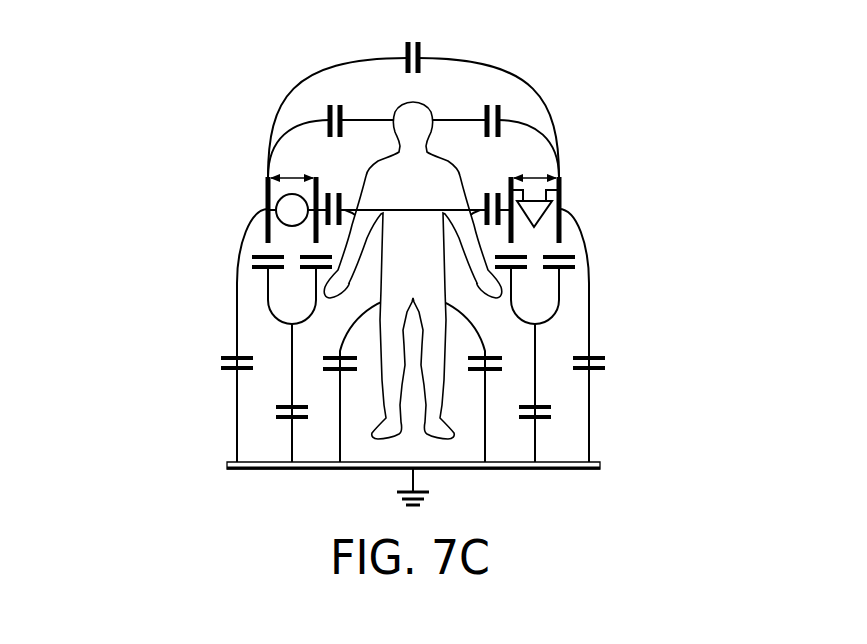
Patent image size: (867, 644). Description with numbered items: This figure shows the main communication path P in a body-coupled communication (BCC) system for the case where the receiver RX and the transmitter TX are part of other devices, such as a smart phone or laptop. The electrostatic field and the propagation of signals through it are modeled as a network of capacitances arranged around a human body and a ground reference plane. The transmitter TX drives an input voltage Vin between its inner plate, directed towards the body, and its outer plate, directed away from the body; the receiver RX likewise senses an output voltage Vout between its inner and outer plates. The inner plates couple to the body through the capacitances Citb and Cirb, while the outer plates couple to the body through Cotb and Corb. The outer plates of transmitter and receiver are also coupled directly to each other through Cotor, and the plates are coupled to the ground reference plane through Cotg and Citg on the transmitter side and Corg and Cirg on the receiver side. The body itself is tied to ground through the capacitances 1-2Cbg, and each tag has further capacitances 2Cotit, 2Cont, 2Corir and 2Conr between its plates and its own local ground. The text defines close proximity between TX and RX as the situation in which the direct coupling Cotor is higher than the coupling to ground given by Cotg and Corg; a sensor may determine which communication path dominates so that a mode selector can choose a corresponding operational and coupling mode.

The direct capacitive coupling between transmitter and receiver Cotor is at (408, 43).
The capacitance between outer transmitter plate and body Cotb is at (332, 107).
The capacitance between outer receiver plate and body Corb is at (489, 107).
The capacitance between inner transmitter plate and body Citb is at (340, 194).
The capacitance between inner receiver plate and body Cirb is at (483, 194).
The input voltage of transmitter Vin is at (292, 175).
The output voltage of receiver Vout is at (534, 175).
The transmitter TX is at (292, 210).
The receiver RX is at (535, 221).
The main communication path P is at (226, 232).
The capacitance between outer transmitter electrode and tag local ground 2Cotit is at (250, 262).
The capacitance between inner transmitter electrode and tag local ground 2Cont is at (310, 270).
The capacitance between outer receiver electrode and tag local ground 2Corir is at (576, 262).
The capacitance between inner receiver electrode and tag local ground 2Conr is at (516, 270).
The capacitive coupling of outer transmitter plate to ground Cotg is at (212, 360).
The capacitive coupling of outer receiver plate to ground Corg is at (613, 360).
The half of body-to-ground capacitance 1-2Cbg is at (328, 362).
The capacitance between inner transmitter plate and ground Citg is at (280, 427).
The capacitance between inner receiver plate and ground Cirg is at (523, 427).